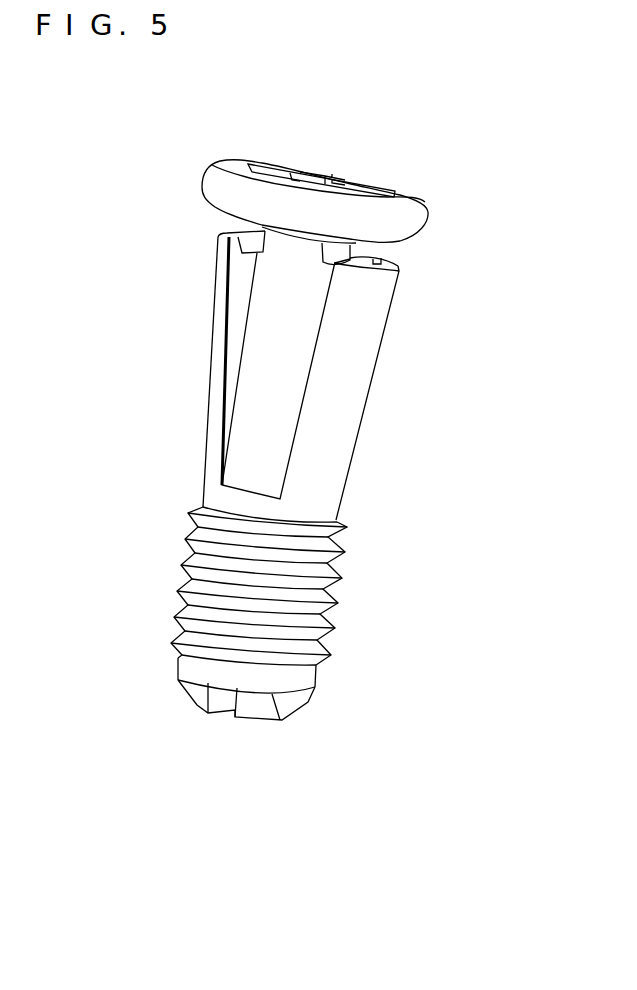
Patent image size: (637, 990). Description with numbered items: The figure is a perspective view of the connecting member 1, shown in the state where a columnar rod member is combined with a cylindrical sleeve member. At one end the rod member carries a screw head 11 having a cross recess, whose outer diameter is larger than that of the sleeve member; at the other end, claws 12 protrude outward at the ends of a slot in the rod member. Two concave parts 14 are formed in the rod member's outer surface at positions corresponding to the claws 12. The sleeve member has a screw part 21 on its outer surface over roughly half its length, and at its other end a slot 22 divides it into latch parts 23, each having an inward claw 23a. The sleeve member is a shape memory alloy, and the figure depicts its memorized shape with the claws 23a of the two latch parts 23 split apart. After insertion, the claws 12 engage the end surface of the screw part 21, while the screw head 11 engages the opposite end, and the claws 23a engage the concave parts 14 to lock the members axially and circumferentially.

The connecting member 1 is at (387, 163).
The screw head 11 is at (427, 213).
The claws 12 is at (273, 716).
The concave parts 14 is at (377, 253).
The screw part 21 is at (332, 628).
The slot 22 is at (228, 327).
The latch parts 23 is at (222, 290).
The claws 23a is at (217, 235).